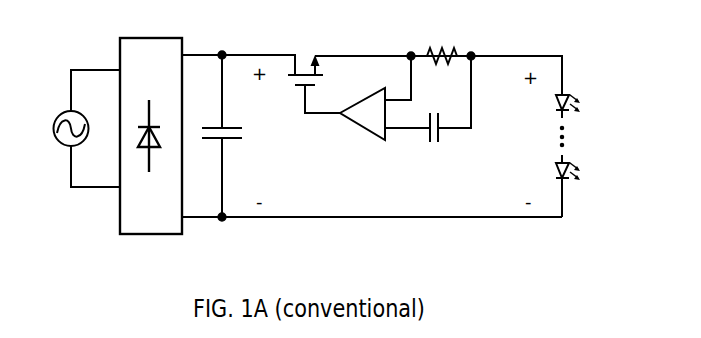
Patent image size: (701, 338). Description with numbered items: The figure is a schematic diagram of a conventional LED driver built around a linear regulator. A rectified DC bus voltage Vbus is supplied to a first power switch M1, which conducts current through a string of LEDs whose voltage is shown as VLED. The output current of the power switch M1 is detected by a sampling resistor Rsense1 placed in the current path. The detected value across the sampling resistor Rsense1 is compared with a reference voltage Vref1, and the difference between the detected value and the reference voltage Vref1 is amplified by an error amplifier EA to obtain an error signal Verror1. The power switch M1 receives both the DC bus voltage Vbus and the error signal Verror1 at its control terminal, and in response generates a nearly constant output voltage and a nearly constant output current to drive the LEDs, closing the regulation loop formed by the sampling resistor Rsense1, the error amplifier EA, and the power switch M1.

The first power switch M1 is at (286, 53).
The error amplifier EA is at (371, 96).
The sampling resistor Rsense1 is at (436, 48).
The reference voltage Vref1 is at (431, 142).
The DC bus voltage Vbus is at (244, 136).
The error signal Verror1 is at (307, 114).
The LED string / LED voltage VLED is at (544, 156).